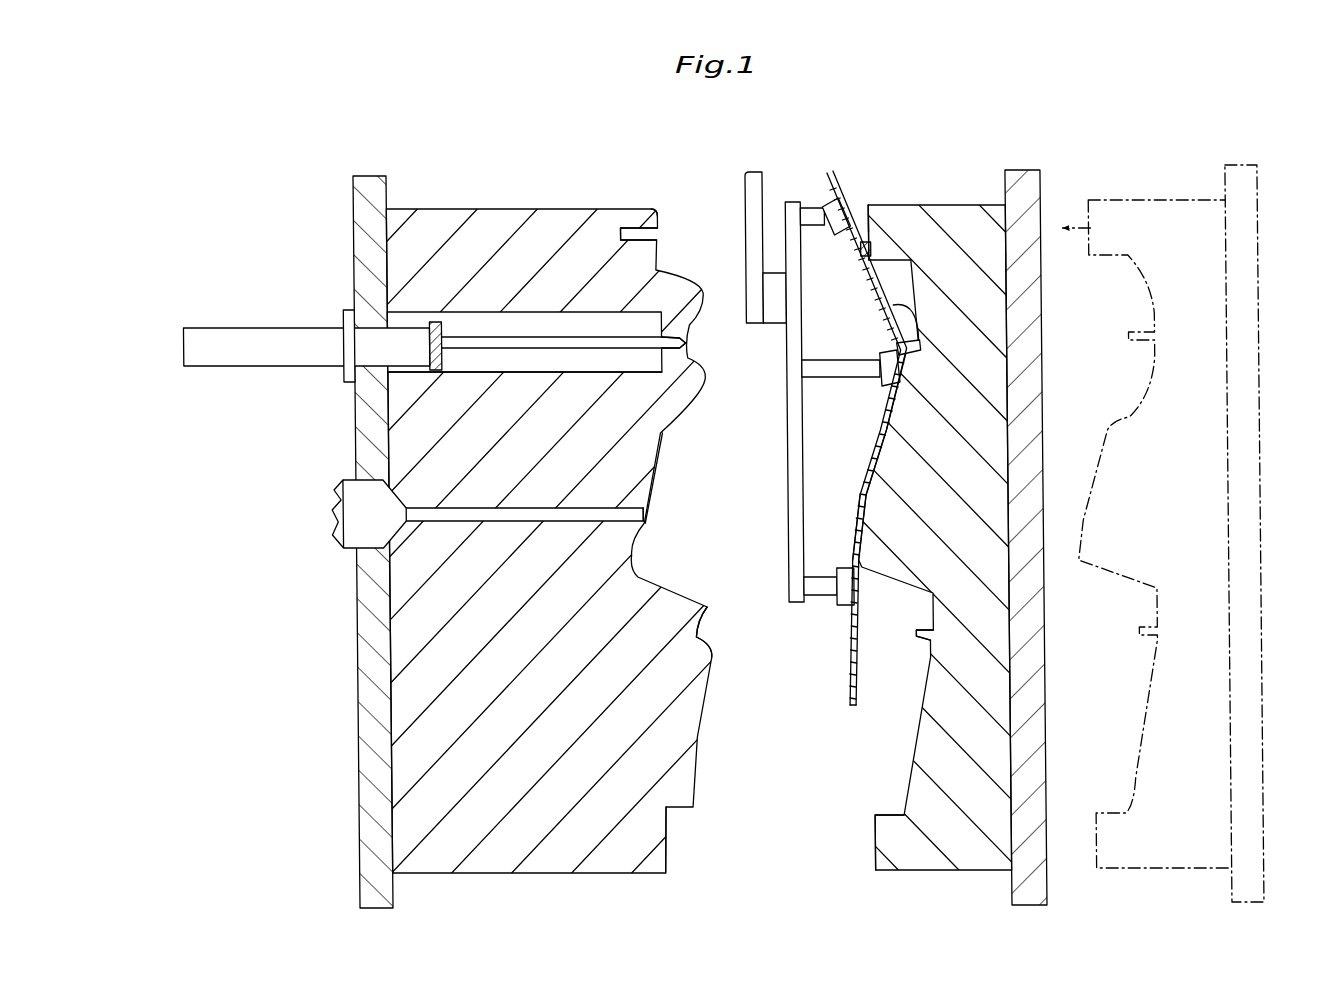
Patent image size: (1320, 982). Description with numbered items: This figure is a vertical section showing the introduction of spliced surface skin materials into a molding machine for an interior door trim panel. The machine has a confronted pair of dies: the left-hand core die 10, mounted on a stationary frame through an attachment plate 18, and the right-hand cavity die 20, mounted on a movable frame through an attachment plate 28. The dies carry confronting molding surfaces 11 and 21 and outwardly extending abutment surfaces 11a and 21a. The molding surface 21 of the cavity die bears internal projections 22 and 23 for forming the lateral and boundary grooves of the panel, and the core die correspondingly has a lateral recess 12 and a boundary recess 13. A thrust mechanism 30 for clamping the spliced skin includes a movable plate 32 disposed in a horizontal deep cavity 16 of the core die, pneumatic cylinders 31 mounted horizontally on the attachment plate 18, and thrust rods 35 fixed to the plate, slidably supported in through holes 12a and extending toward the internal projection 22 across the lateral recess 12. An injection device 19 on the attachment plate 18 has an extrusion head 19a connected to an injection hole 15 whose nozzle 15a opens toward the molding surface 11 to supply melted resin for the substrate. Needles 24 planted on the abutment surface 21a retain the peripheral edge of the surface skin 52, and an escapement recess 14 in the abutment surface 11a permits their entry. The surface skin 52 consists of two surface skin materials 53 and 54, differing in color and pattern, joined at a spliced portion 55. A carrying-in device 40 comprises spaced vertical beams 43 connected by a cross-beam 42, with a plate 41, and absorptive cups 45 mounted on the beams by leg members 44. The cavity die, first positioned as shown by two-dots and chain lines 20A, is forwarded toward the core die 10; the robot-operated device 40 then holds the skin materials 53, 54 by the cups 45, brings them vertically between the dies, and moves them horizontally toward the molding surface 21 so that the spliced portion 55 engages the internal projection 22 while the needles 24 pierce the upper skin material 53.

The core die 10 is at (438, 228).
The molding surface 11 is at (663, 452).
The abutment surface 11a is at (652, 211).
The lateral recess 12 is at (702, 355).
The through hole 12a is at (690, 344).
The recess 13 is at (707, 640).
The escapement recess 14 is at (655, 238).
The injection hole 15 is at (463, 515).
The nozzle 15a is at (645, 521).
The horizontal deep cavity 16 is at (445, 362).
The attachment plate 18 is at (378, 212).
The injection device 19 is at (330, 503).
The extrusion head 19a is at (334, 523).
The cavity die 20 is at (975, 205).
The two-dots and chain line position of cavity die 20A is at (1155, 200).
The molding surface 21 is at (872, 440).
The abutment surface 21a is at (874, 206).
The internal projection 22 is at (888, 300).
The internal projection 23 is at (927, 642).
The needles 24 is at (866, 225).
The attachment plate 28 is at (1040, 348).
The thrust mechanism 30 is at (312, 327).
The pneumatic cylinder 31 is at (296, 350).
The movable plate 32 is at (430, 330).
The thrust rod 35 is at (503, 333).
The carrying-in device 40 is at (802, 389).
The first plate 41 is at (753, 237).
The cross-beam 42 is at (776, 297).
The vertical beam 43 is at (790, 460).
The leg member 44 is at (811, 218).
The absorptive cup 45 is at (830, 190).
The surface skin 52 is at (856, 502).
The surface skin material 53 is at (858, 250).
The surface skin material 54 is at (846, 646).
The spliced portion 55 is at (896, 350).